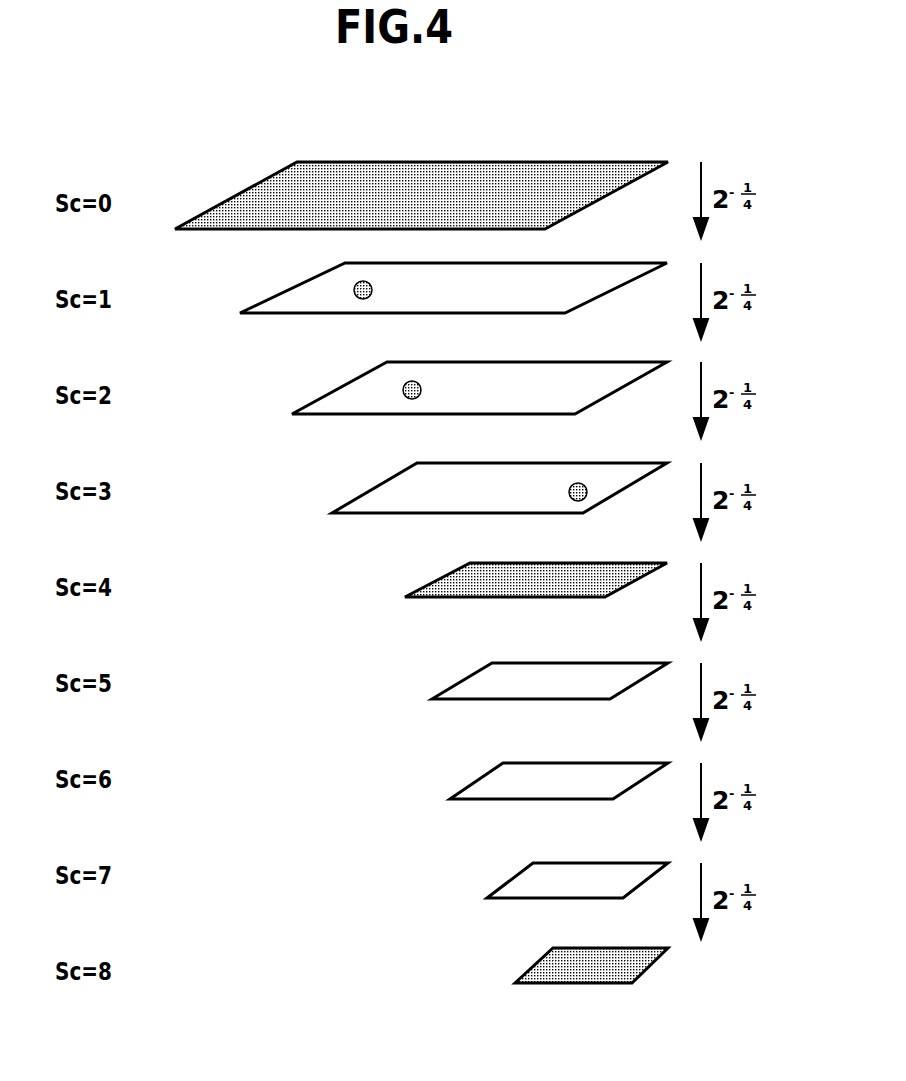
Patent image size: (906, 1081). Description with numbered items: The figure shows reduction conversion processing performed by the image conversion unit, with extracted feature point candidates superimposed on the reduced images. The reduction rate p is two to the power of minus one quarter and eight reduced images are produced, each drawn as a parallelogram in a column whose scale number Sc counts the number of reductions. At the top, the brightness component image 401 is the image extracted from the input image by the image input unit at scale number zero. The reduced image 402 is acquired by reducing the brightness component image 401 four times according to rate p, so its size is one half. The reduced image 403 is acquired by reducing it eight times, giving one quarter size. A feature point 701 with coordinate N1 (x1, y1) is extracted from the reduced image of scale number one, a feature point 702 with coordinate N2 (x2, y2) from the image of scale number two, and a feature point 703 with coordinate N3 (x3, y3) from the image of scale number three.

The brightness component image 401 is at (242, 193).
The reduced image 402 is at (437, 583).
The reduced image 403 is at (538, 965).
The feature point 701 is at (353, 290).
The feature point 702 is at (402, 391).
The feature point 703 is at (583, 483).